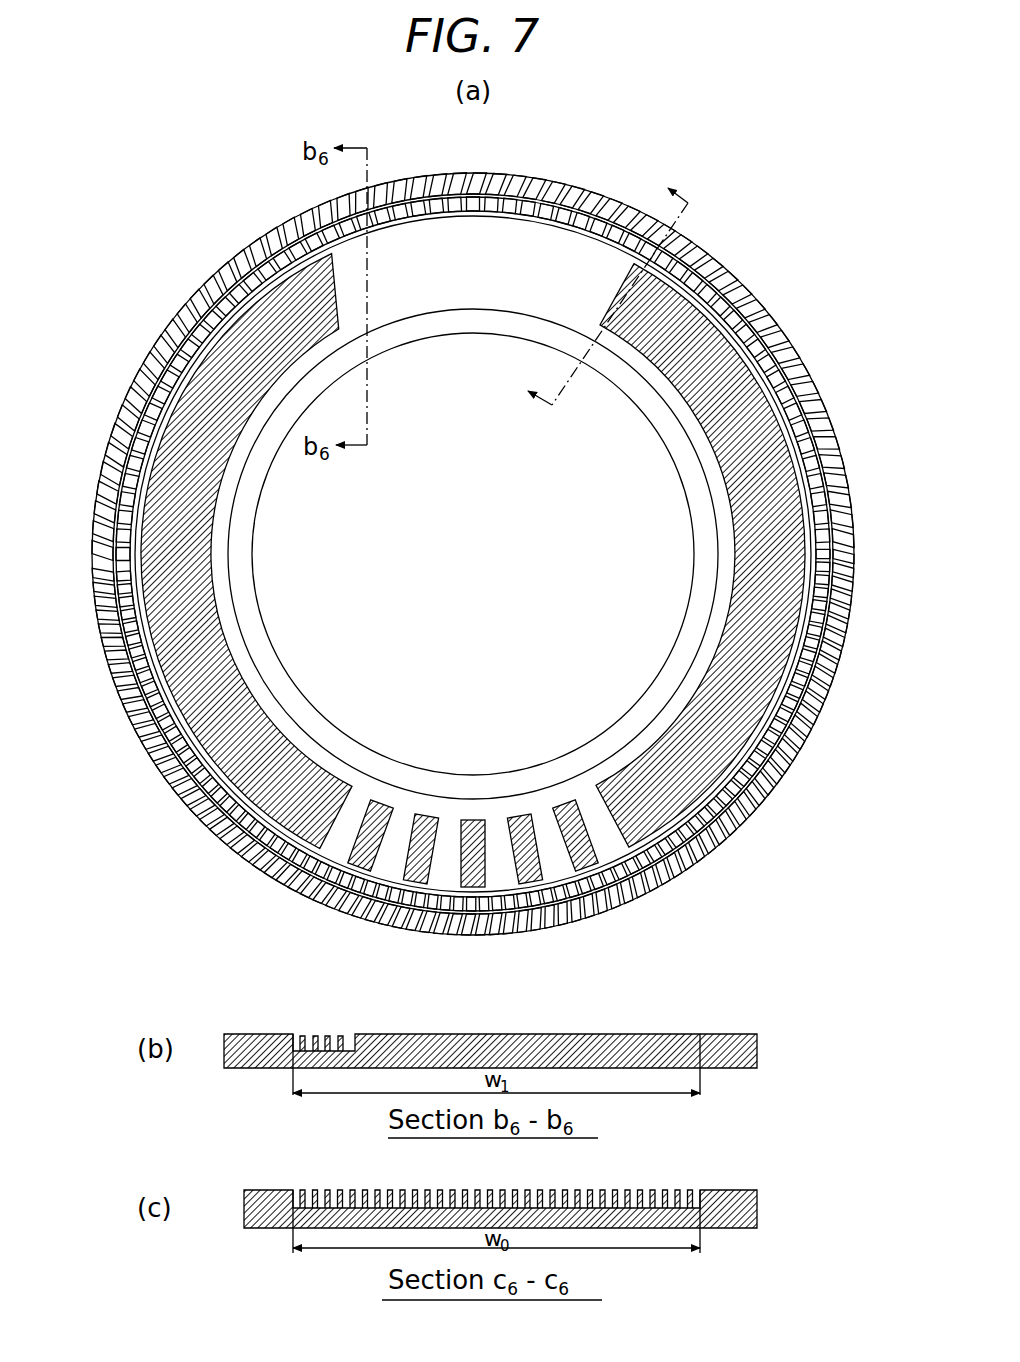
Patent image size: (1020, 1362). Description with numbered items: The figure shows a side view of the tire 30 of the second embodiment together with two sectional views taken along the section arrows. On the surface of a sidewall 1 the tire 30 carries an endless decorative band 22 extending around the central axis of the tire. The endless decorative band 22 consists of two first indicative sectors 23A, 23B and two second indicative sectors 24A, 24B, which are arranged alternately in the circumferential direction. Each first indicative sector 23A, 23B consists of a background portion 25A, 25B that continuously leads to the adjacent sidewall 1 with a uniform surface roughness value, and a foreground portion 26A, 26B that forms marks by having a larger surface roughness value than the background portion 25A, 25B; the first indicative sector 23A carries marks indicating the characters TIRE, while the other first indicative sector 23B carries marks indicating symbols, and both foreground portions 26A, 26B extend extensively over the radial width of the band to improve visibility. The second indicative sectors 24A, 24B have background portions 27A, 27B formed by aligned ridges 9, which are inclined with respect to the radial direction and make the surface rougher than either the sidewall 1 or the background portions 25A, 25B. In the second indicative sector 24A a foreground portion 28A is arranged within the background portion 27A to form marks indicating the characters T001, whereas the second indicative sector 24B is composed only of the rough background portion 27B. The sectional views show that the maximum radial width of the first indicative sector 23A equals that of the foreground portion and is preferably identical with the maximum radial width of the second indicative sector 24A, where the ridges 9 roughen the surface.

The sidewall 1 is at (262, 258).
The ridges 9 is at (336, 1034).
The endless decorative band 22 is at (460, 702).
The first indicative sector 23A is at (462, 237).
The first indicative sector 23B is at (448, 852).
The second indicative sector 24A is at (598, 702).
The second indicative sector 24B is at (207, 561).
The background portion 25A is at (537, 237).
The background portion 25B is at (497, 857).
The foreground portion 26A is at (565, 240).
The foreground portion 26B is at (567, 800).
The background portion 27A is at (712, 352).
The background portion 27B is at (233, 776).
The foreground portion 28A is at (660, 262).
The tire 30 is at (722, 204).